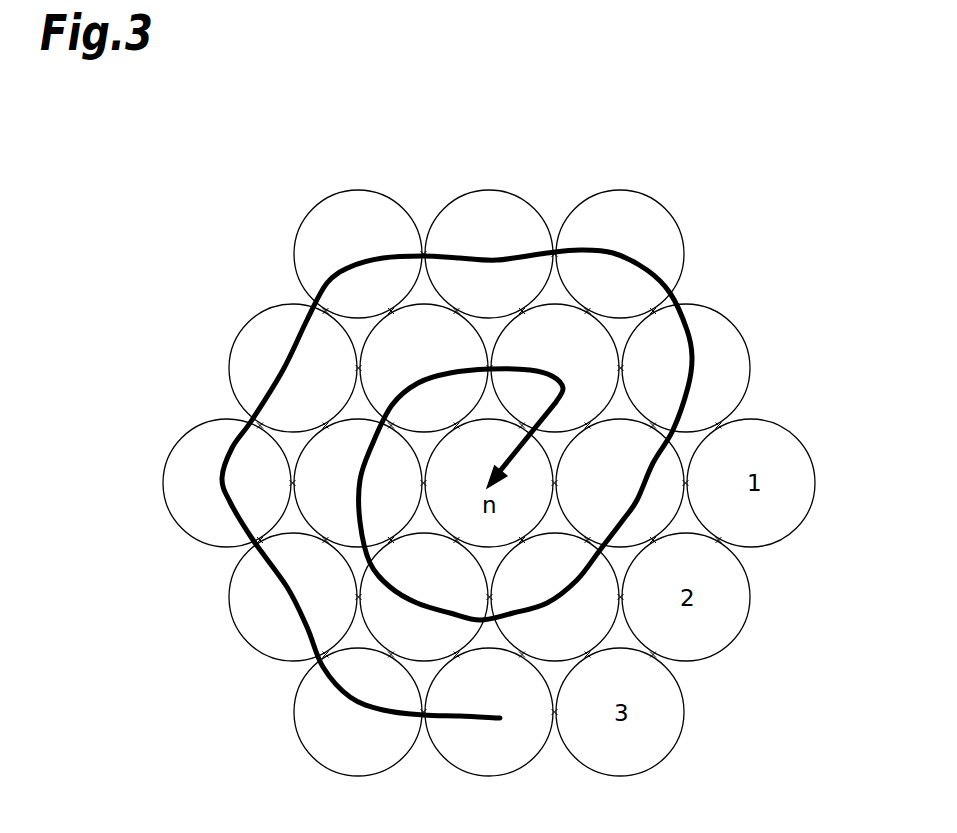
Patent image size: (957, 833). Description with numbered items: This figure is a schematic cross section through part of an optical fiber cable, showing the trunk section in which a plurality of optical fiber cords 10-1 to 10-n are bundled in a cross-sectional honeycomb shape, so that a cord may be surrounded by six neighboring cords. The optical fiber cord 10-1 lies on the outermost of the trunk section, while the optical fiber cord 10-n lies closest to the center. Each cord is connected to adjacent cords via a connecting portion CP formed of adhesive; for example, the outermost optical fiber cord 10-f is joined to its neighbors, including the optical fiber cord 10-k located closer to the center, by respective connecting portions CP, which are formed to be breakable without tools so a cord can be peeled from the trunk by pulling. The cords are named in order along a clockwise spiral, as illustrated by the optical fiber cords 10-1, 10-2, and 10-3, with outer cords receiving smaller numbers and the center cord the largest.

The optical fiber cord 10-f is at (338, 208).
The optical fiber cord 10-k is at (428, 340).
The optical fiber cord 10-n is at (485, 453).
The optical fiber cord 10-1 is at (795, 470).
The optical fiber cord 10-2 is at (733, 603).
The optical fiber cord 10-3 is at (673, 720).
The connecting portion CP is at (718, 425).